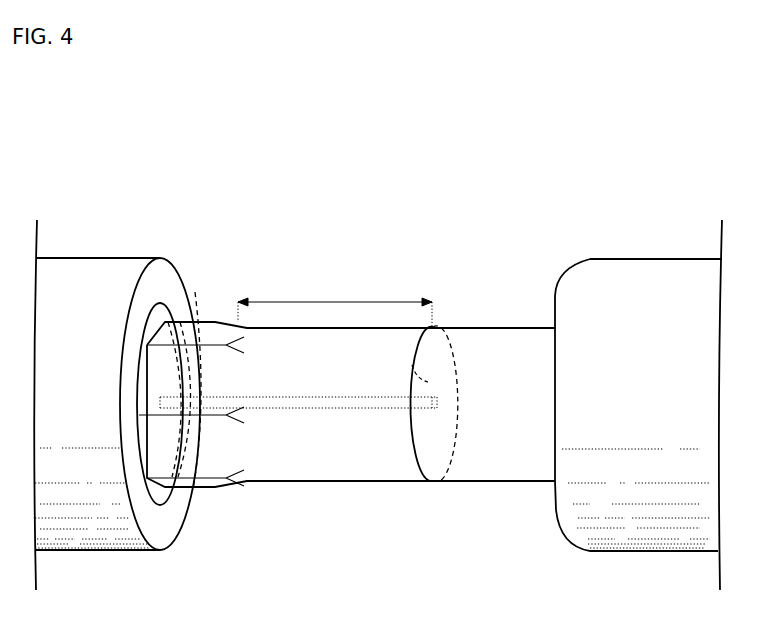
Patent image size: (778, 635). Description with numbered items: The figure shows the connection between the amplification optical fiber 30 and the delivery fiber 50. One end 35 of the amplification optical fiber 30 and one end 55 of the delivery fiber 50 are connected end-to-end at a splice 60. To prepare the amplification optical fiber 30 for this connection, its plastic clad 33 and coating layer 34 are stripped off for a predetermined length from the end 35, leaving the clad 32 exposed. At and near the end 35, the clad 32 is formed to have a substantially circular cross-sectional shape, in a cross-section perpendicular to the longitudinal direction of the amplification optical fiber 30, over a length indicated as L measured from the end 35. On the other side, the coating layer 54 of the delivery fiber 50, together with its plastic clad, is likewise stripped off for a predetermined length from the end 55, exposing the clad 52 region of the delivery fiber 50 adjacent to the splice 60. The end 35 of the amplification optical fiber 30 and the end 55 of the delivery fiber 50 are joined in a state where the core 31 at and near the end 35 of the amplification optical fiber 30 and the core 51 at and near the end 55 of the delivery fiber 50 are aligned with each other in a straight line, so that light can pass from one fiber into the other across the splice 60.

The amplification optical fiber 30 is at (268, 158).
The core 31 is at (352, 403).
The clad 32 is at (213, 331).
The plastic clad 33 is at (162, 313).
The coating layer 34 is at (78, 278).
The end 35 is at (428, 461).
The delivery fiber 50 is at (632, 155).
The core 51 is at (465, 403).
The end face of second member 52 is at (478, 360).
The coating layer 54 is at (620, 303).
The end 55 is at (412, 365).
The splice 60 is at (438, 322).